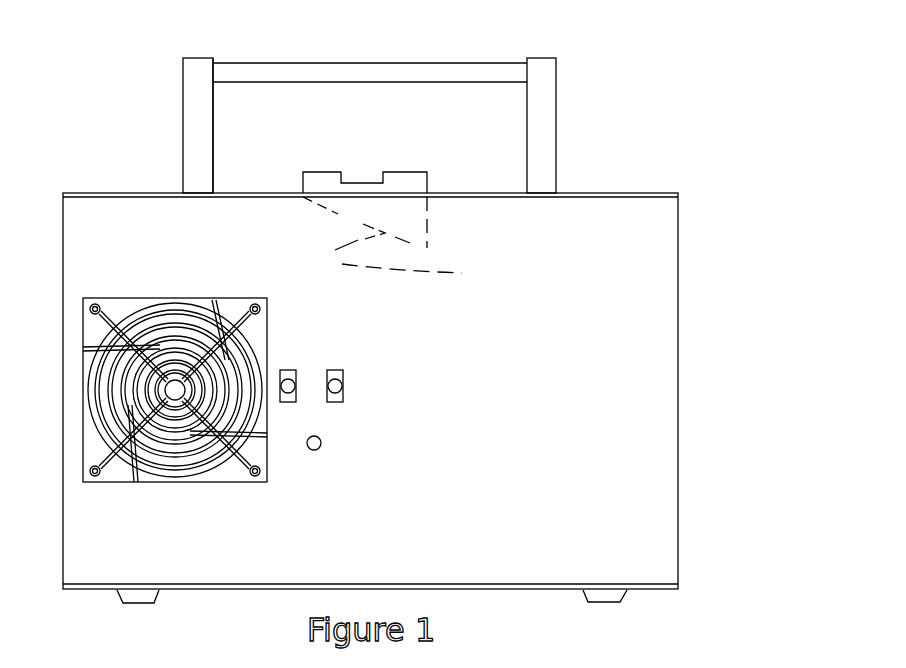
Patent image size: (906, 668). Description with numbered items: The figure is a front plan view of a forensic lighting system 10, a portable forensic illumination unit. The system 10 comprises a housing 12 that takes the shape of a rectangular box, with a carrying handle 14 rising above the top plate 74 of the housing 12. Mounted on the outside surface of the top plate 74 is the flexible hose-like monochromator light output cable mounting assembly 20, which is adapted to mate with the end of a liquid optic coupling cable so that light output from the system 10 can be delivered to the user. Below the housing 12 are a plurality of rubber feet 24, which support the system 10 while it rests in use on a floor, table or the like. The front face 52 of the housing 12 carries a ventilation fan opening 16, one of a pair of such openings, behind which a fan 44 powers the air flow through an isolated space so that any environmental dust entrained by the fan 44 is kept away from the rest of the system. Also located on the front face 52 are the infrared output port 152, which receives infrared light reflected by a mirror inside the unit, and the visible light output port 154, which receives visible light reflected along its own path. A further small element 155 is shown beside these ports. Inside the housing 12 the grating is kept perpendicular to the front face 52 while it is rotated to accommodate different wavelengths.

The forensic lighting system 10 is at (690, 105).
The housing 12 is at (570, 192).
The carrying handle 14 is at (541, 58).
The ventilation fan opening 16 is at (170, 470).
The monochromator light output cable mounting assembly 20 is at (408, 172).
The rubber feet 24 is at (136, 605).
The fan 44 is at (208, 345).
The front face 52 is at (545, 373).
The top plate 74 is at (236, 193).
The infrared output port 152 is at (297, 372).
The visible light output port 154 is at (343, 400).
The indicator light 155 is at (322, 447).